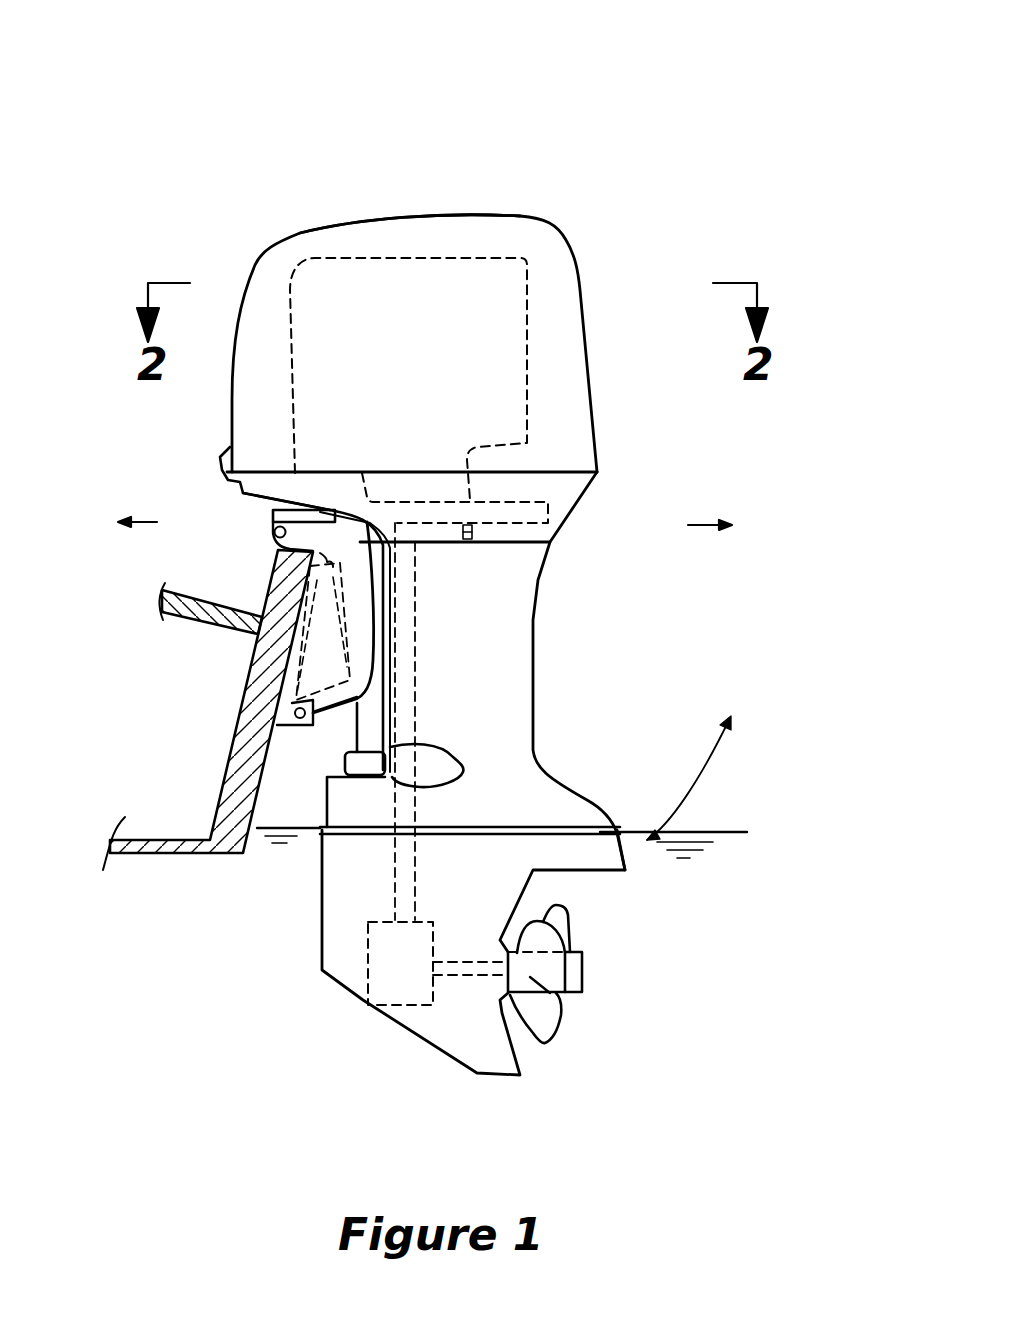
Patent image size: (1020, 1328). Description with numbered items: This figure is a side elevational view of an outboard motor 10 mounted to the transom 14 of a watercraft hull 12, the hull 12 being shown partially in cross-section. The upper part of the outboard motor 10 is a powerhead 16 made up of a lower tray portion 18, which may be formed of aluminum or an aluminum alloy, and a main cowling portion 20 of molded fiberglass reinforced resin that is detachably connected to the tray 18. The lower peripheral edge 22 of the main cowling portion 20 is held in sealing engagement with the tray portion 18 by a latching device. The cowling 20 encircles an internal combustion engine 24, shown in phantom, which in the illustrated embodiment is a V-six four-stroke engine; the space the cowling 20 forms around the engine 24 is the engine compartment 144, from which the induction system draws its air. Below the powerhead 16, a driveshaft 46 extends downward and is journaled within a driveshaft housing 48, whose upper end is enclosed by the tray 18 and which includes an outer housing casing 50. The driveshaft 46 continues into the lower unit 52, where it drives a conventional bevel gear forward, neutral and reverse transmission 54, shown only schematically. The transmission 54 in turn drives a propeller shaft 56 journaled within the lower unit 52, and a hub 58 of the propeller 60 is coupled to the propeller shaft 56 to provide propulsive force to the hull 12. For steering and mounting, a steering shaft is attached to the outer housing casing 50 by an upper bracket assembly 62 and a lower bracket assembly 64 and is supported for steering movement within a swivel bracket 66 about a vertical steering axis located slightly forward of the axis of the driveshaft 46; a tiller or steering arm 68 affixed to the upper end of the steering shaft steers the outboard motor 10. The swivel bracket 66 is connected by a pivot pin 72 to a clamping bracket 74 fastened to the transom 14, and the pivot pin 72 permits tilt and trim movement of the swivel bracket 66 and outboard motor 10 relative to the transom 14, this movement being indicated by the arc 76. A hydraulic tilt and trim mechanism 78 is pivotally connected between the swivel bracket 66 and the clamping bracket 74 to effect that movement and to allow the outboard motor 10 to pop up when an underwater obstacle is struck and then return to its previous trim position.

The outboard motor 10 is at (762, 60).
The watercraft hull 12 is at (178, 862).
The transom 14 is at (235, 748).
The powerhead 16 is at (665, 205).
The lower tray portion 18 is at (578, 483).
The main cowling portion 20 is at (587, 343).
The lower peripheral edge 22 is at (555, 467).
The internal combustion engine 24 is at (460, 248).
The engine compartment 144 is at (333, 242).
The driveshaft 46 is at (417, 658).
The driveshaft housing 48 is at (548, 685).
The outer housing casing 50 is at (520, 625).
The lower unit 52 is at (562, 517).
The transmission 54 is at (367, 962).
The propeller shaft 56 is at (473, 980).
The hub 58 is at (582, 978).
The propeller 60 is at (570, 922).
The upper bracket assembly 62 is at (468, 547).
The lower bracket assembly 64 is at (453, 770).
The swivel bracket 66 is at (373, 735).
The steering arm 68 is at (287, 503).
The pivot pin 72 is at (267, 533).
The clamping bracket 74 is at (332, 674).
The arc 76 is at (697, 783).
The hydraulic tilt and trim mechanism 78 is at (313, 645).